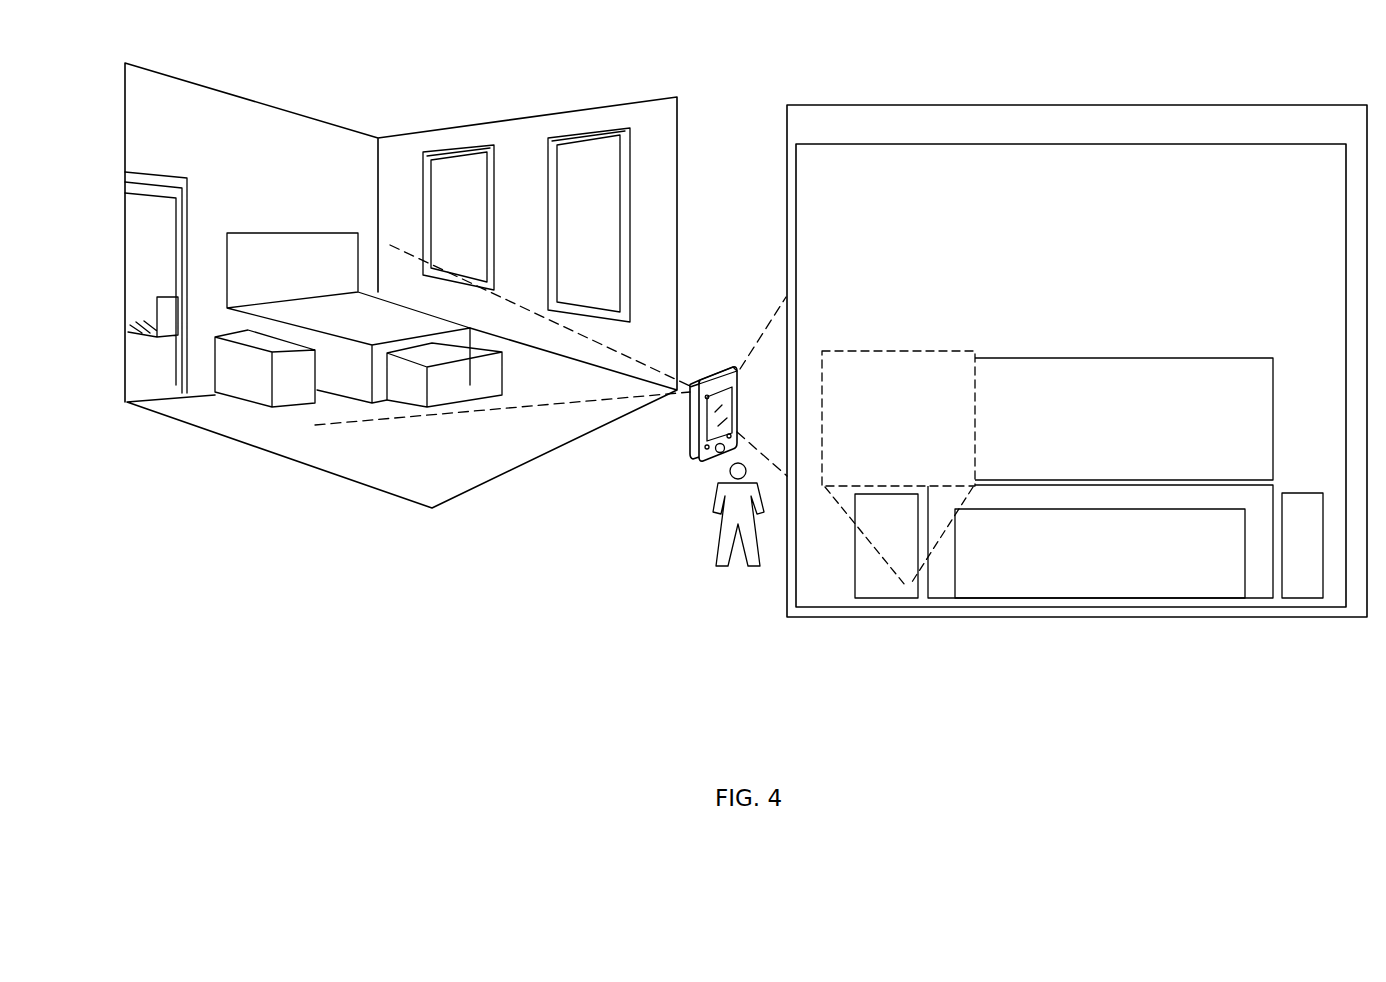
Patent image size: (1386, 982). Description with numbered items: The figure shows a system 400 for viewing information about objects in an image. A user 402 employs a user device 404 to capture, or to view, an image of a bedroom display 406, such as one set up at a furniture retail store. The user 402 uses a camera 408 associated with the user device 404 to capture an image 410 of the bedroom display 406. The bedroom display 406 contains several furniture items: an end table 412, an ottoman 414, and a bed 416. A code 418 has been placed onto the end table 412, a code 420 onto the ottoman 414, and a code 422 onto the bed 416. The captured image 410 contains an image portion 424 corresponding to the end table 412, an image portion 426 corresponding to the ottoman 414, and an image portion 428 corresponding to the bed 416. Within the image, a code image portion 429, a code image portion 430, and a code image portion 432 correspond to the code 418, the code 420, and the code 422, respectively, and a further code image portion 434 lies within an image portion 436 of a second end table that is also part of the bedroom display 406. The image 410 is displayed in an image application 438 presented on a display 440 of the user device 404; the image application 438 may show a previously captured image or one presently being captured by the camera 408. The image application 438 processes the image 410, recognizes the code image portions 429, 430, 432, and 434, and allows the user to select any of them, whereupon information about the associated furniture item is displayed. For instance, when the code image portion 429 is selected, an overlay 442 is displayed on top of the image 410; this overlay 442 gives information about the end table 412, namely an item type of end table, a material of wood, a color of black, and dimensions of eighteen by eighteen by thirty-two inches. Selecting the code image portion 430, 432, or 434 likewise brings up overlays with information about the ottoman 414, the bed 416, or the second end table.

The system 400 is at (253, 755).
The user 402 is at (718, 544).
The user device 404 is at (697, 458).
The bedroom display 406 is at (269, 555).
The camera 408 is at (696, 384).
The image 410 is at (1330, 181).
The end table 412 is at (240, 372).
The ottoman 414 is at (415, 402).
The bed 416 is at (367, 329).
The code 418 is at (300, 402).
The code 420 is at (489, 398).
The code 422 is at (470, 338).
The image portion 424 is at (917, 526).
The image portion 426 is at (1230, 546).
The image portion 428 is at (1230, 507).
The code image portion 429 is at (906, 601).
The code image portion 430 is at (1229, 601).
The code image portion 432 is at (1256, 492).
The code image portion 434 is at (1312, 601).
The image portion 436 is at (1322, 526).
The image application 438 is at (1358, 133).
The display 440 is at (713, 423).
The overlay 442 is at (961, 382).